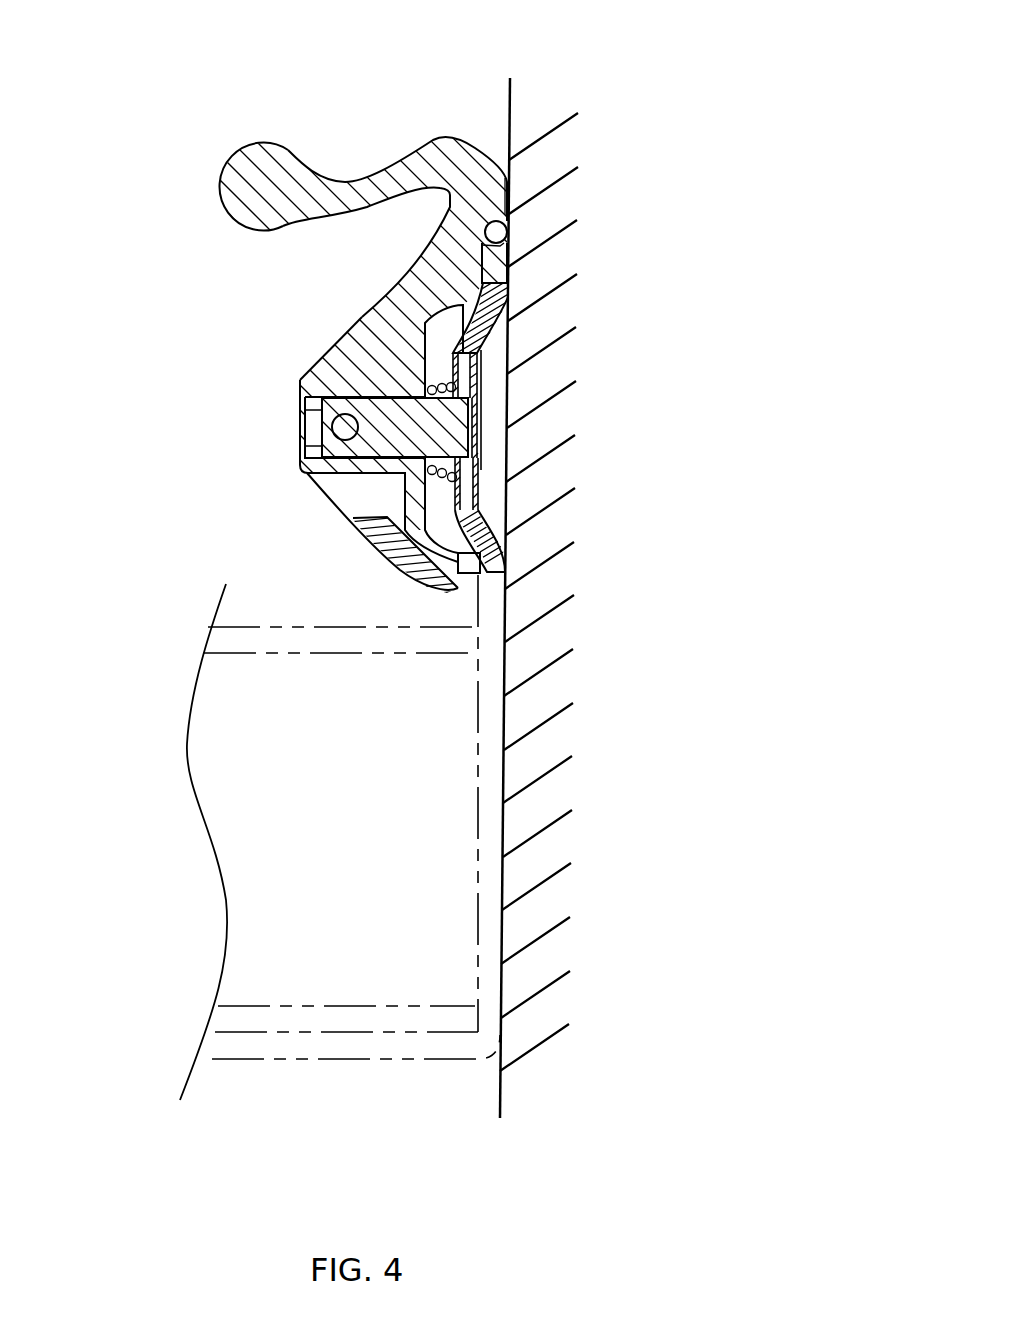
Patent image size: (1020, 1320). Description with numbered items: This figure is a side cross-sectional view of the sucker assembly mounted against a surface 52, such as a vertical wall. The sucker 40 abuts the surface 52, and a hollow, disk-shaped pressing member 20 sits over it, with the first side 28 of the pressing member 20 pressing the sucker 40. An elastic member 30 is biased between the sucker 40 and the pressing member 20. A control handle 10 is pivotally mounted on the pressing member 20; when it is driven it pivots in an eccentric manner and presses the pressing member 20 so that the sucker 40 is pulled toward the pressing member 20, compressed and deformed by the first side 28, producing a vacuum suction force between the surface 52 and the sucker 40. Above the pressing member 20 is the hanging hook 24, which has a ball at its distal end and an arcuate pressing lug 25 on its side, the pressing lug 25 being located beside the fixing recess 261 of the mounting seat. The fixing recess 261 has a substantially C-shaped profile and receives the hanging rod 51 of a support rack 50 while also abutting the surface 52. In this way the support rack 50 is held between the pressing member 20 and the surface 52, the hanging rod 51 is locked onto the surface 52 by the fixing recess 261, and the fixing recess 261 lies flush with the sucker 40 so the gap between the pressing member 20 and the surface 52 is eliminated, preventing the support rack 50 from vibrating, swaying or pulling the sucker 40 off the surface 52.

The control handle 10 is at (318, 490).
The pressing member 20 is at (312, 360).
The hanging hook 24 is at (378, 188).
The pressing lug 25 is at (513, 163).
The fixing recess 261 is at (513, 195).
The first side 28 is at (510, 295).
The elastic member 30 is at (433, 365).
The sucker 40 is at (484, 513).
The support rack 50 is at (258, 1072).
The hanging rod 51 is at (507, 229).
The surface 52 is at (533, 758).